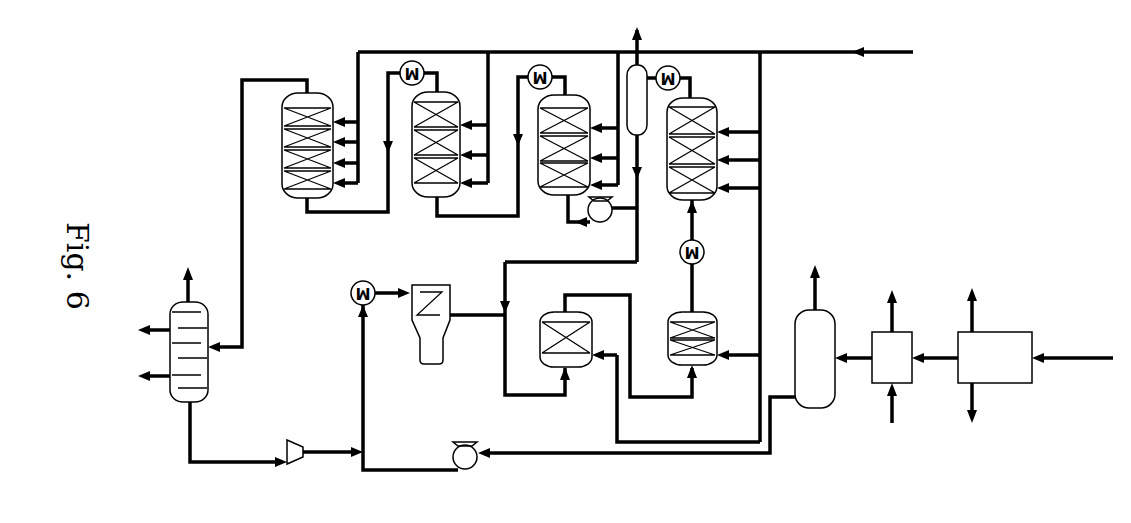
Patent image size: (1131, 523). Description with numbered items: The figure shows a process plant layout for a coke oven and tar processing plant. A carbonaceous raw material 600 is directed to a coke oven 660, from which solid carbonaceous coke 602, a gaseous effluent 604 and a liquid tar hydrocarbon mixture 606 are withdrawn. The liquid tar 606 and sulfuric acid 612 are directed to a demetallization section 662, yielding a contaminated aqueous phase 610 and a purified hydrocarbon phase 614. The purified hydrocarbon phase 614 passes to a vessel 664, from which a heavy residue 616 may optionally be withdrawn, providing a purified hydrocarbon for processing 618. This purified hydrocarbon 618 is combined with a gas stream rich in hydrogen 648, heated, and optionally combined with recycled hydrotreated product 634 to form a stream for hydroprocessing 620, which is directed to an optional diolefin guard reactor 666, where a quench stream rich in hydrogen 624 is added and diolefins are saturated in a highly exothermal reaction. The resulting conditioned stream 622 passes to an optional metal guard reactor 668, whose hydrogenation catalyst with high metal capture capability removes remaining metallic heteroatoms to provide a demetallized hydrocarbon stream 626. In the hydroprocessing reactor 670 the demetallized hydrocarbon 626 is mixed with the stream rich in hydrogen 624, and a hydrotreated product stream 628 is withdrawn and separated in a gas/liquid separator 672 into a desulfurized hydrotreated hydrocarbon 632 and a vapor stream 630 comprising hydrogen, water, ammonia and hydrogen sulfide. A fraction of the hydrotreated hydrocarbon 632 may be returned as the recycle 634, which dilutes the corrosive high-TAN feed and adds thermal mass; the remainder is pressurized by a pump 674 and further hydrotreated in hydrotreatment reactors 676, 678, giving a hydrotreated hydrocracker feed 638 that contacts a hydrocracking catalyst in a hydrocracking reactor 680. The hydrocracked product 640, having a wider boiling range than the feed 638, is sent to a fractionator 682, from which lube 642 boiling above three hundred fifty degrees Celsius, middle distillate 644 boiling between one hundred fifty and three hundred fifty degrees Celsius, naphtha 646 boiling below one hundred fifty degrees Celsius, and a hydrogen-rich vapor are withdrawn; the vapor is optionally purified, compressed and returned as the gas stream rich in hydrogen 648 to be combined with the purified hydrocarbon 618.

The carbonaceous raw material 600 is at (1061, 361).
The solid carbonaceous coke 602 is at (975, 304).
The gaseous effluent 604 is at (976, 418).
The liquid tar hydrocarbon mixture 606 is at (931, 362).
The contaminated aqueous phase 610 is at (896, 306).
The sulfuric acid 612 is at (893, 418).
The purified hydrocarbon phase 614 is at (854, 362).
The heavy residue 616 is at (817, 284).
The purified hydrocarbon for processing 618 is at (745, 456).
The stream for hydroprocessing 620 is at (503, 389).
The conditioned stream 622 is at (653, 400).
The stream rich in hydrogen 624 is at (612, 402).
The demetallized hydrocarbon stream 626 is at (694, 282).
The hydrotreated product stream 628 is at (692, 78).
The vapor stream 630 is at (641, 33).
The hydrotreated hydrocarbon 632 is at (639, 192).
The recycled hydrotreated product 634 is at (637, 266).
The hydrotreated hydrocracker feed 638 is at (358, 214).
The hydrocracked product 640 is at (243, 350).
The lube 642 is at (184, 284).
The middle distillate 644 is at (162, 333).
The naphtha 646 is at (160, 379).
The gas stream rich in hydrogen 648 is at (220, 465).
The coke oven 660 is at (997, 385).
The demetallization section 662 is at (908, 385).
The separator vessel 664 is at (823, 410).
The diolefin guard reactor 666 is at (582, 366).
The metal guard reactor 668 is at (704, 367).
The hydroprocessing reactor 670 is at (698, 201).
The gas/liquid separator 672 is at (645, 133).
The pump 674 is at (608, 217).
The hydrotreatment reactor 676 is at (552, 196).
The hydrotreatment reactor 678 is at (429, 198).
The hydrocracking reactor 680 is at (302, 198).
The fractionator 682 is at (207, 402).